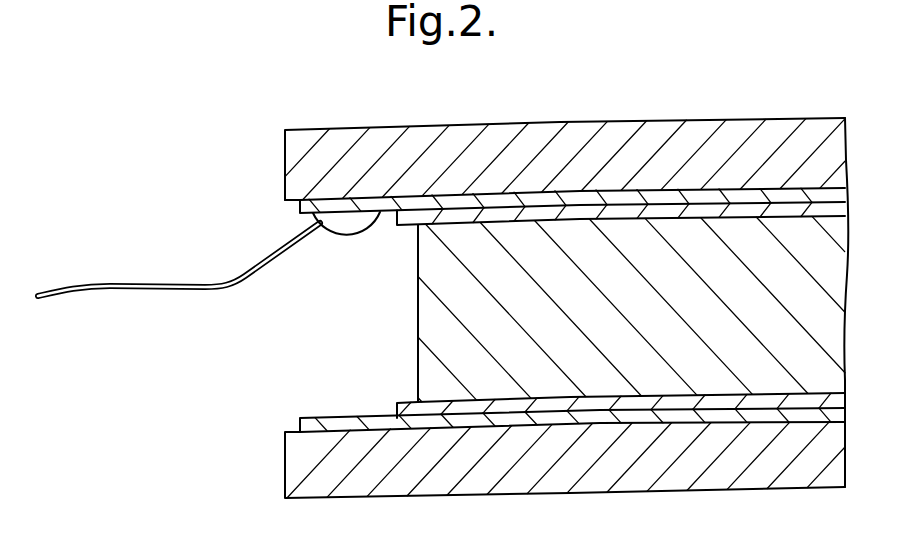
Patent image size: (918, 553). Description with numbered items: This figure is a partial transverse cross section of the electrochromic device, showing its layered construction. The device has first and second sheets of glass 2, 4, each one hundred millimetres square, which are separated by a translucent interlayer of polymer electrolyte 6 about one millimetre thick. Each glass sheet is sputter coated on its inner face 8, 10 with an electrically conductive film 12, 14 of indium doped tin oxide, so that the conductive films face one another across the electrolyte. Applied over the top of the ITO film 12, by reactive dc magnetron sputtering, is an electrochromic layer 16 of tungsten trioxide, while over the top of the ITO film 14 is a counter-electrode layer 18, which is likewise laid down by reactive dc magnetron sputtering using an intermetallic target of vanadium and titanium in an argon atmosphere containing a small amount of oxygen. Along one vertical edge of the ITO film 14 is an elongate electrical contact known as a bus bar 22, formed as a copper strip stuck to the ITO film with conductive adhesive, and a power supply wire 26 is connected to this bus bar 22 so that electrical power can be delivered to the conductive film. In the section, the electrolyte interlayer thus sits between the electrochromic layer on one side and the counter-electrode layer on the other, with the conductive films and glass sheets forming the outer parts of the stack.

The first sheet of glass 2 is at (712, 473).
The second sheet of glass 4 is at (562, 150).
The translucent interlayer of polymer electrolyte 6 is at (817, 365).
The inner face 8 is at (482, 428).
The inner face 10 is at (650, 187).
The electrically conductive film 12 is at (401, 426).
The electrically conductive film 14 is at (778, 195).
The electrochromic layer 16 is at (612, 404).
The counter-electrode layer 18 is at (461, 212).
The bus bar 22 is at (352, 233).
The power supply wire 26 is at (113, 290).